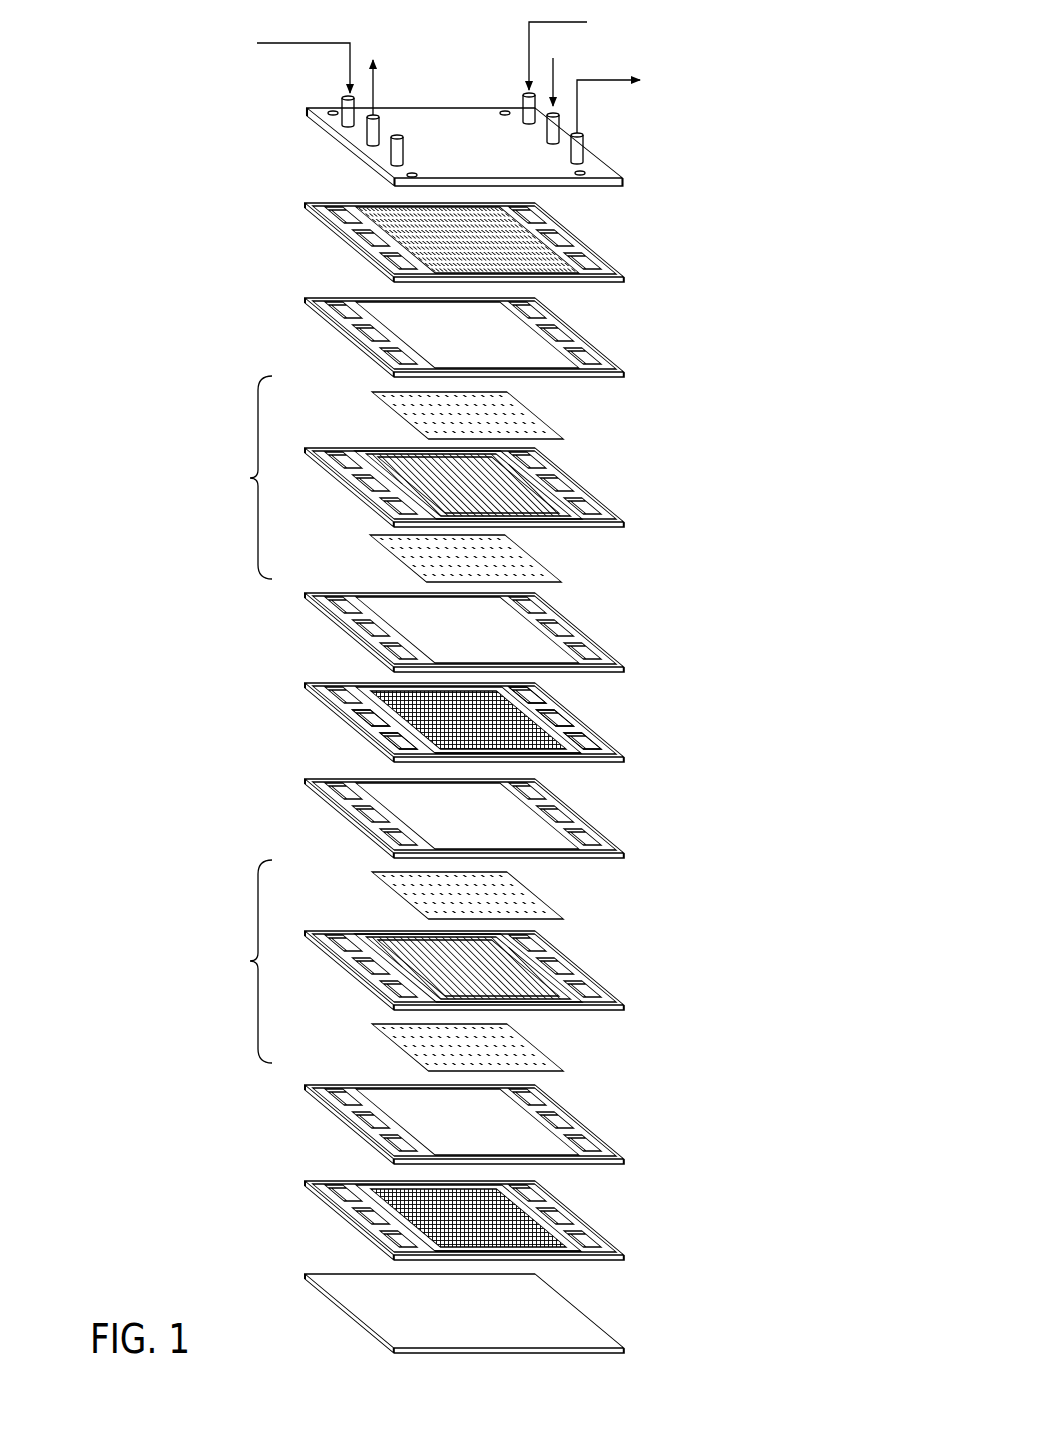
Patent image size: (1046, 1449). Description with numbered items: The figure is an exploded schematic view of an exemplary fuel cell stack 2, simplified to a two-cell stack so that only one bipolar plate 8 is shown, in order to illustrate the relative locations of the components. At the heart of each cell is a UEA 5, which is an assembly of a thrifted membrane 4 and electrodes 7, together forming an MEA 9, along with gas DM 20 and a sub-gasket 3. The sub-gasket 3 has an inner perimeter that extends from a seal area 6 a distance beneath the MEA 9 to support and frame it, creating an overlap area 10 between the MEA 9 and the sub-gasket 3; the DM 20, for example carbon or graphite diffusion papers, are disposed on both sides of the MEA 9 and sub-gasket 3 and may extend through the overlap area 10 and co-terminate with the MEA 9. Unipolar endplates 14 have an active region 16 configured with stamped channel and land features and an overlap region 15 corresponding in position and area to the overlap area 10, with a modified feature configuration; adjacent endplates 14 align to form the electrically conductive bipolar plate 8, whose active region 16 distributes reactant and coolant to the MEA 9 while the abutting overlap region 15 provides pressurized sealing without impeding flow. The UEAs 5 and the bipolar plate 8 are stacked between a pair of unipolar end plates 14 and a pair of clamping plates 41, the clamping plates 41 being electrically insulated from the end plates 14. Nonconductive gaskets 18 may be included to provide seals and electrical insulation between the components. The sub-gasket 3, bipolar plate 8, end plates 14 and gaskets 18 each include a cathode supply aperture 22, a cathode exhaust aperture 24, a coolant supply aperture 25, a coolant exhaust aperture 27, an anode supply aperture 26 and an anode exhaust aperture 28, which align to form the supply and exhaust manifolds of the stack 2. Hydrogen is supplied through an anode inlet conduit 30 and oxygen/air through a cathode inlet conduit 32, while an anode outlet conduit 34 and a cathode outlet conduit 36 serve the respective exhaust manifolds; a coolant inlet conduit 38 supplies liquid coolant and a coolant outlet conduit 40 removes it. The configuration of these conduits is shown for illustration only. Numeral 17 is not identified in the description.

The fuel cell stack 2 is at (676, 481).
The sub-gasket 3 is at (475, 730).
The thrifted membrane 4 is at (400, 440).
The UEA 5 is at (439, 723).
The seal area 6 is at (555, 492).
The electrodes 7 is at (510, 483).
The bipolar plate 8 is at (452, 701).
The MEA 9 is at (424, 459).
The overlap area 10 is at (395, 483).
The unipolar endplates 14 is at (322, 238).
The overlap region 15 is at (553, 753).
The active region 16 is at (600, 280).
The mesh frame 17 is at (545, 728).
The nonconductive gaskets 18 is at (372, 338).
The gas DM 20 is at (528, 412).
The cathode supply aperture 22 is at (340, 695).
The cathode exhaust aperture 24 is at (610, 748).
The coolant supply aperture 25 is at (588, 727).
The anode supply aperture 26 is at (525, 690).
The coolant exhaust aperture 27 is at (360, 720).
The anode exhaust aperture 28 is at (395, 750).
The anode inlet conduit 30 is at (524, 110).
The cathode inlet conduit 32 is at (343, 100).
The anode outlet conduit 34 is at (389, 160).
The cathode outlet conduit 36 is at (584, 146).
The coolant inlet conduit 38 is at (548, 136).
The coolant outlet conduit 40 is at (350, 132).
The clamping plates 41 is at (467, 730).